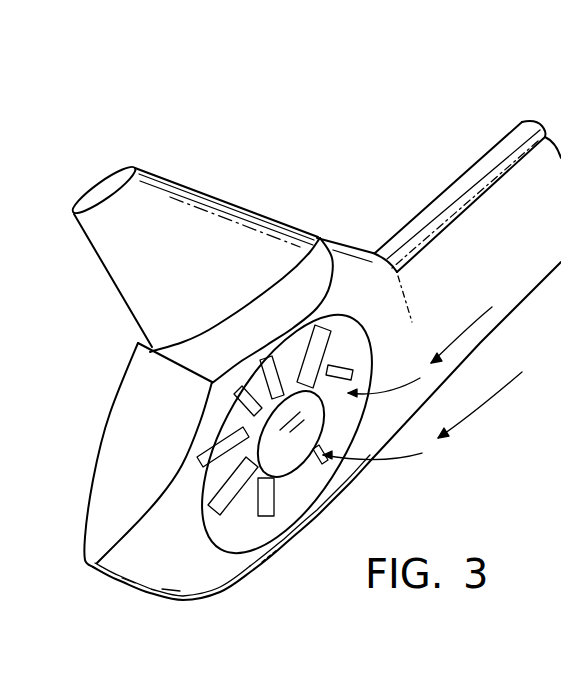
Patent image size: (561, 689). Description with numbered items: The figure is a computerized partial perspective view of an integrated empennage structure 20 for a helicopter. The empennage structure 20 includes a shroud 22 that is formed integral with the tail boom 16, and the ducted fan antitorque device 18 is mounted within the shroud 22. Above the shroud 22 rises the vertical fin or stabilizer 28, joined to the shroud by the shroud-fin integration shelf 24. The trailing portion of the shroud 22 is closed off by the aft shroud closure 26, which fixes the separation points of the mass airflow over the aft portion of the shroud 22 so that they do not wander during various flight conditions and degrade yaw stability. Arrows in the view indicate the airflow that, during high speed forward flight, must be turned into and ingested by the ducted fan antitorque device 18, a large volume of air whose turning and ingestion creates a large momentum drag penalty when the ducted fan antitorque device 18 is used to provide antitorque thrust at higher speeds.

The tail boom 16 is at (447, 183).
The ducted fan antitorque device 18 is at (307, 483).
The integrated empennage structure 20 is at (352, 215).
The shroud 22 is at (203, 603).
The shroud-fin integration shelf 24 is at (200, 360).
The aft shroud closure 26 is at (120, 428).
The vertical fin or stabilizer 28 is at (217, 218).